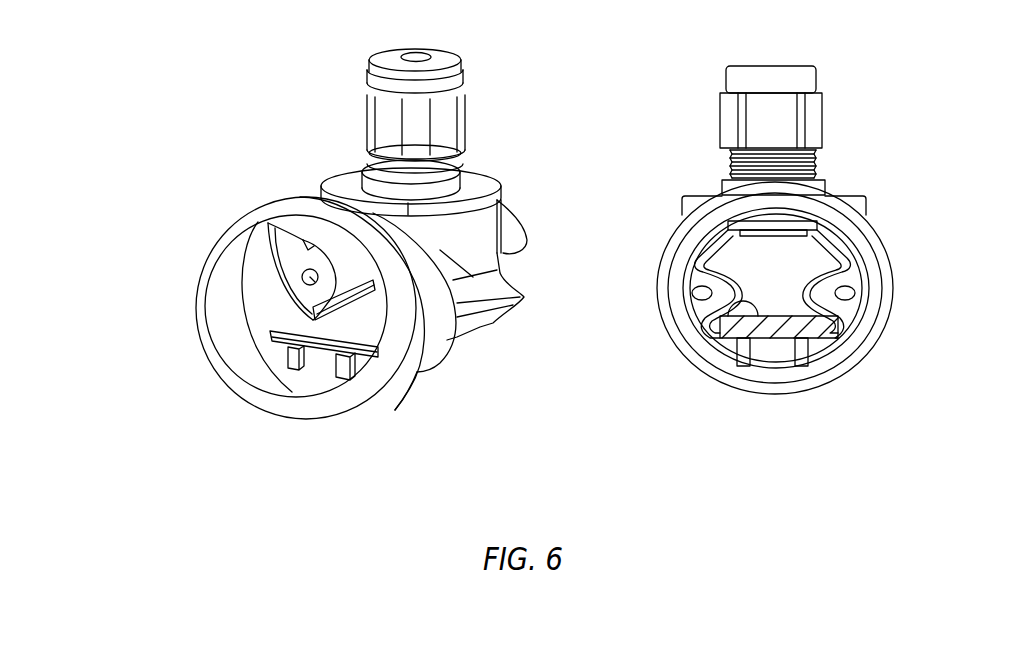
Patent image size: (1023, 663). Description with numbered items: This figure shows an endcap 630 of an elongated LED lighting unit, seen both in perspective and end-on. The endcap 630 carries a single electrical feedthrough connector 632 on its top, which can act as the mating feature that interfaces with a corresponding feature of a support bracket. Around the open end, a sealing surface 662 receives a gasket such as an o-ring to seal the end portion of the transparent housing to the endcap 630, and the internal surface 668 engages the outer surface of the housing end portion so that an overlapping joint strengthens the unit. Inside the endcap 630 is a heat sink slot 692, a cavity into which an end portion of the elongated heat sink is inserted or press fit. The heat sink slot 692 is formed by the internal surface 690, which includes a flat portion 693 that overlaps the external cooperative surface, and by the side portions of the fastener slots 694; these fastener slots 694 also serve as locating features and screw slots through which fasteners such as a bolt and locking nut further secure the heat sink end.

The endcap 630 is at (257, 183).
The electrical feedthrough connector 632 is at (352, 70).
The sealing surface 662 is at (251, 303).
The internal surface 668 is at (264, 369).
The internal surface 690 is at (350, 323).
The heat sink slot 692 is at (806, 248).
The flat portion 693 is at (727, 330).
The fastener slots 694 is at (691, 292).